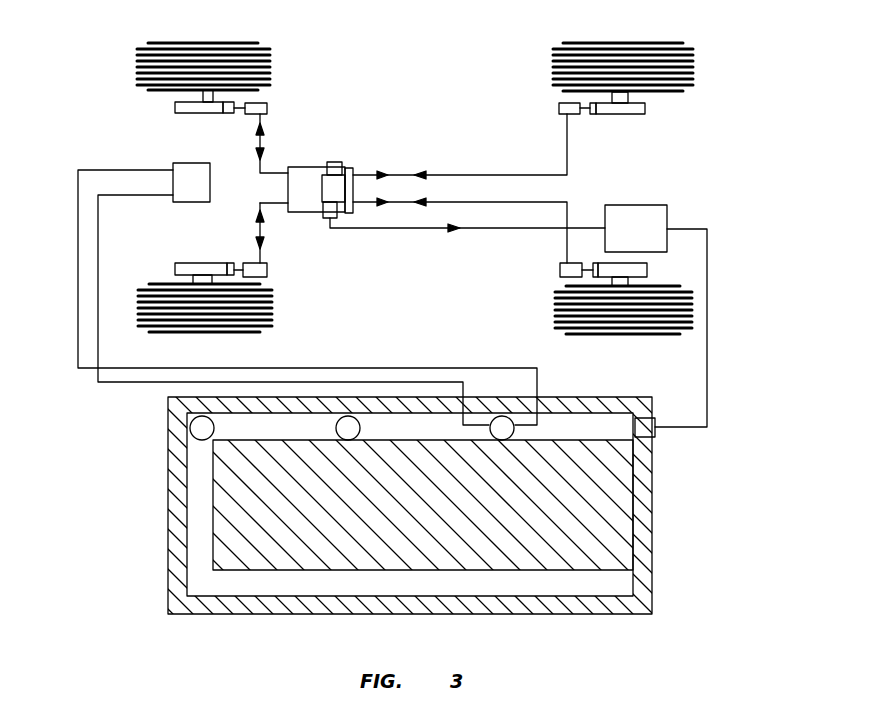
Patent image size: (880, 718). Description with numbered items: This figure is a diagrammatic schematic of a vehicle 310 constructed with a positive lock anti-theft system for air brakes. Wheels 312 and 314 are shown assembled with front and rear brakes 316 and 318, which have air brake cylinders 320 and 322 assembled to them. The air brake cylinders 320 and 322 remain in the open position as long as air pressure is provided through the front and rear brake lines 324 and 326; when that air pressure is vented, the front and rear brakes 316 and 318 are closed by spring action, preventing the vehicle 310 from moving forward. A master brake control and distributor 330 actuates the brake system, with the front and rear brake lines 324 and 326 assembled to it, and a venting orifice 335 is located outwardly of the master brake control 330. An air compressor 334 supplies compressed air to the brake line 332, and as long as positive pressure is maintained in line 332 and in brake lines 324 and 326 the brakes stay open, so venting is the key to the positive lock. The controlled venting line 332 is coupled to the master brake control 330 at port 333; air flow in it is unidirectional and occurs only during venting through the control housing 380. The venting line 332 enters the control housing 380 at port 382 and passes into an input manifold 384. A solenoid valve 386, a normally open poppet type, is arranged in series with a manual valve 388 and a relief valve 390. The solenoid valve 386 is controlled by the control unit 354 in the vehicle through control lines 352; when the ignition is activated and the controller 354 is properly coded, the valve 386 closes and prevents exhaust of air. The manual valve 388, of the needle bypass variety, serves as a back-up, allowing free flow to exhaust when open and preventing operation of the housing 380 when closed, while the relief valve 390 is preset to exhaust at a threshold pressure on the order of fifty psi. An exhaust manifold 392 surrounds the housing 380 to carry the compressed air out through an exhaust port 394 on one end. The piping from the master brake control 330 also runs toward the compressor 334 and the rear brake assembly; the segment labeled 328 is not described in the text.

The vehicle 310 is at (386, 128).
The front wheel 312 is at (270, 72).
The wheel 314 is at (693, 72).
The front brake 316 is at (175, 106).
The rear brake 318 is at (647, 108).
The air brake cylinder 320 is at (268, 108).
The air brake cylinder 322 is at (559, 108).
The front brake line 324 is at (263, 136).
The rear brake line 326 is at (567, 242).
The rear brake lines 328 is at (355, 168).
The master brake control and distributor 330 is at (288, 188).
The controlled venting line 332 is at (707, 268).
The port 333 is at (325, 218).
The air compressor 334 is at (667, 212).
The venting orifice 335 is at (333, 162).
The control lines 352 is at (78, 324).
The control unit 354 is at (183, 163).
The control housing 380 is at (360, 604).
The port 382 is at (656, 432).
The input manifold 384 is at (570, 423).
The solenoid valve 386 is at (508, 414).
The manual valve 388 is at (361, 428).
The relief valve 390 is at (215, 428).
The exhaust manifold 392 is at (264, 586).
The exhaust port 394 is at (633, 584).